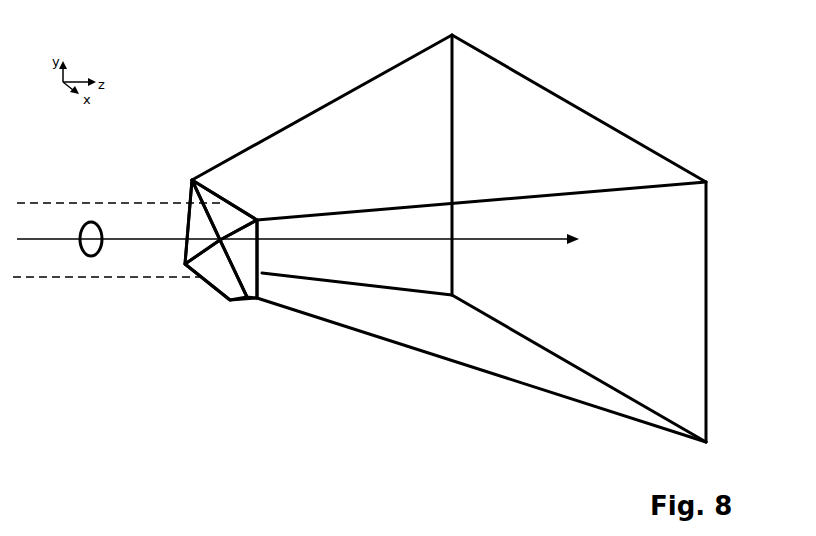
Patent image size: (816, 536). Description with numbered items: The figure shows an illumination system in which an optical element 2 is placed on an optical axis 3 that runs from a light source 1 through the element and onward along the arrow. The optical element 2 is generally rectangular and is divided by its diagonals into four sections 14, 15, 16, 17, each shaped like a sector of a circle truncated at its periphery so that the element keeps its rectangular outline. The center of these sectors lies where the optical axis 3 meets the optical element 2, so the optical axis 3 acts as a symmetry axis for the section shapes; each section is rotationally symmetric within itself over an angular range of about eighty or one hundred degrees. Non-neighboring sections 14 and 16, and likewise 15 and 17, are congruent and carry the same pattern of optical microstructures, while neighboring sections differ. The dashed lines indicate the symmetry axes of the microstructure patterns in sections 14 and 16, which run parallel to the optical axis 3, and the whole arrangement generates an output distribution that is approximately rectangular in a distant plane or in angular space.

The object 1 is at (88, 221).
The optical element 2 is at (187, 215).
The optical axis 3 is at (131, 245).
The section 14 is at (224, 210).
The section 15 is at (202, 222).
The section 16 is at (216, 270).
The section 17 is at (238, 259).